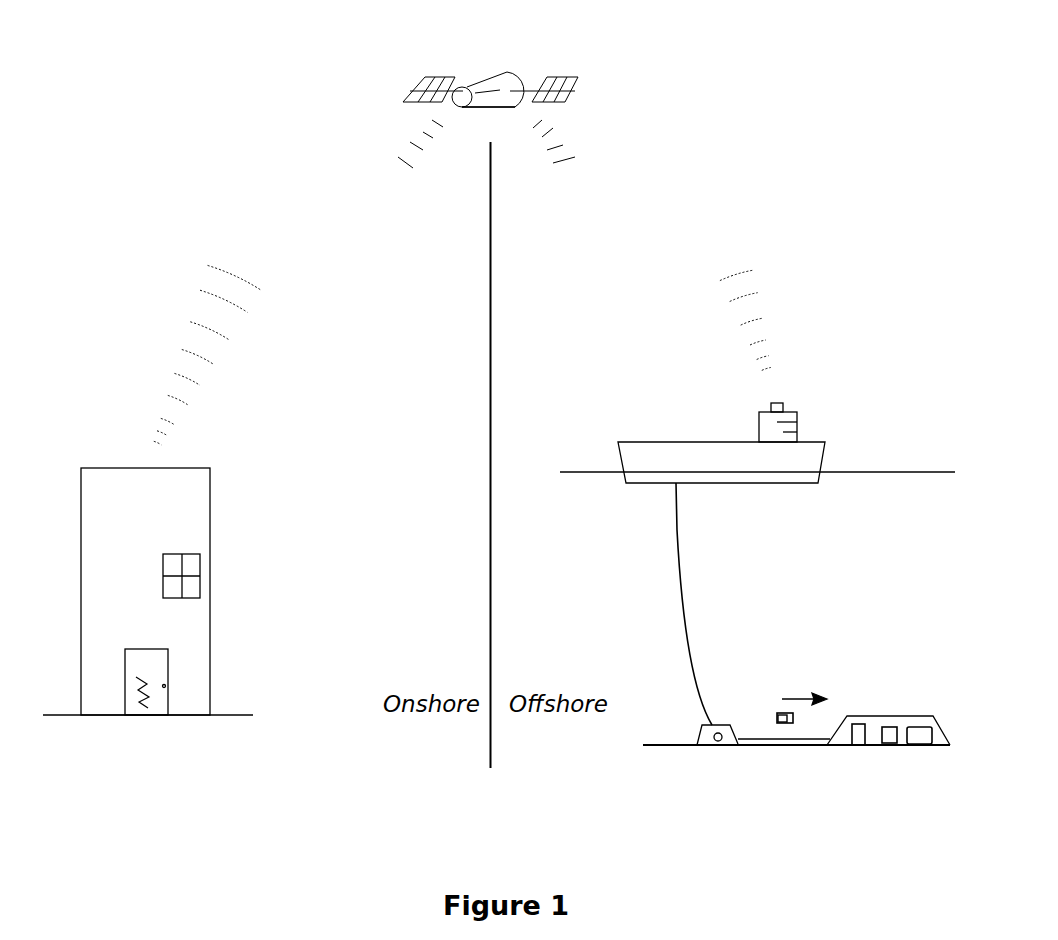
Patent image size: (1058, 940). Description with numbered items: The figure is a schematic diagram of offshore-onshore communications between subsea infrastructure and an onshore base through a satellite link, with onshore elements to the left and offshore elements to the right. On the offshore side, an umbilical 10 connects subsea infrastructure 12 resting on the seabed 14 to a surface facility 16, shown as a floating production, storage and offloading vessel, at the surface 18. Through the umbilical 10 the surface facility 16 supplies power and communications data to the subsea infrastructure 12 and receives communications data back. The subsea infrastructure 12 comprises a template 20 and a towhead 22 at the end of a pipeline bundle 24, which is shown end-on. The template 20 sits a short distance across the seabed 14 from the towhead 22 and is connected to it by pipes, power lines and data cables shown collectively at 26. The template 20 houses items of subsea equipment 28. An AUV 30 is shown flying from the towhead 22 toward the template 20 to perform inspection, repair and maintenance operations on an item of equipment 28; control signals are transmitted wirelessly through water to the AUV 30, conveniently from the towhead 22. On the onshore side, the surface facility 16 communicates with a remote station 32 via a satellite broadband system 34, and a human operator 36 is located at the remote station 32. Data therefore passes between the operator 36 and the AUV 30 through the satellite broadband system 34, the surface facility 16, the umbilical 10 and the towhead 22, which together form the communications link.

The umbilical 10 is at (685, 593).
The subsea infrastructure 12 is at (882, 648).
The seabed 14 is at (663, 745).
The facility 16 is at (810, 450).
The surface 18 is at (575, 470).
The template 20 is at (918, 717).
The towhead 22 is at (707, 738).
The pipeline bundle 24 is at (720, 741).
The pipes, power lines and data cables 26 is at (802, 741).
The subsea equipment 28 is at (917, 737).
The AUV 30 is at (777, 713).
The remote station 32 is at (128, 493).
The satellite broadband system 34 is at (492, 82).
The human operator 36 is at (142, 680).